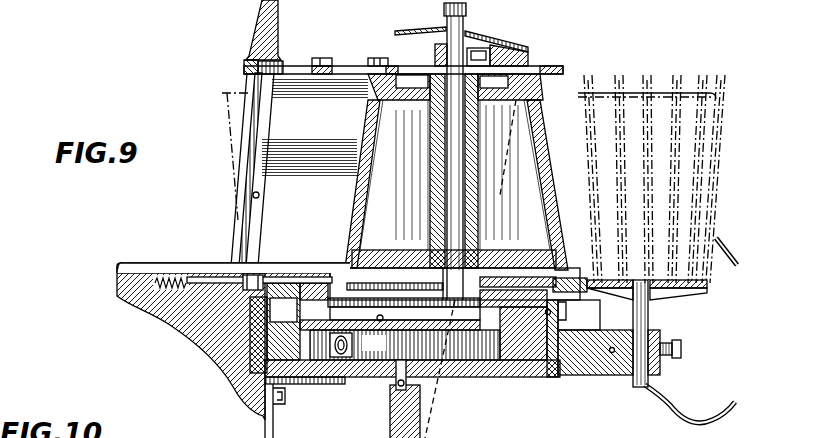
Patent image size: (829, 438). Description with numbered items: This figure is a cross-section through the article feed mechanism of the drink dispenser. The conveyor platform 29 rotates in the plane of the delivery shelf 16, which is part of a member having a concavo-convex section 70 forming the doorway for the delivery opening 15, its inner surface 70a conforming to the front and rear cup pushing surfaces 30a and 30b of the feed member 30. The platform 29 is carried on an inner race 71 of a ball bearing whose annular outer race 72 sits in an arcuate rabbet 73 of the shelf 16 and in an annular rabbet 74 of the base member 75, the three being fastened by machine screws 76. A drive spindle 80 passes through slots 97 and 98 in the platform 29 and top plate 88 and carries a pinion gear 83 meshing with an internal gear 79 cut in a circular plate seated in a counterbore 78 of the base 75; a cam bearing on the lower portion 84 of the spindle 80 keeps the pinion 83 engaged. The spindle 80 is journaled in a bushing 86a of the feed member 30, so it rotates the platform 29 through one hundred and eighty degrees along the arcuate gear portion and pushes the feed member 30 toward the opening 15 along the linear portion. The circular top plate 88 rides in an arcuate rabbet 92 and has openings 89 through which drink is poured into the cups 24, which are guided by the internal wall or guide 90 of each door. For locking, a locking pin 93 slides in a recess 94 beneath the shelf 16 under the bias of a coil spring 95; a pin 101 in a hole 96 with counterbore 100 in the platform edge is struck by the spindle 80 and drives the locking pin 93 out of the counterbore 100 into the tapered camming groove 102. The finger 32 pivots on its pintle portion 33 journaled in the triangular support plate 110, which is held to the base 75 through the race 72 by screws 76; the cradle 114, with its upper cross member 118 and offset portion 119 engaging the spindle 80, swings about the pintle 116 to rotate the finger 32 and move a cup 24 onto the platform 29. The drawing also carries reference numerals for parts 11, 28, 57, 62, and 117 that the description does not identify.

The hopper axis 11 is at (418, 2).
The delivery opening 15 is at (233, 169).
The delivery shelf 16 is at (127, 266).
The cup 24 is at (225, 106).
The tine mounting plate 28 is at (675, 290).
The conveyor platform 29 is at (316, 275).
The feed member 30 is at (452, 155).
The front cup pushing surface 30a is at (362, 124).
The rear cup pushing surface 30b is at (549, 144).
The finger 32 is at (734, 246).
The pintle portion 33 is at (612, 353).
The bearing block 57 is at (405, 345).
The tines 62 is at (615, 135).
The concavo-convex section 70 is at (173, 322).
The inner surface 70a is at (252, 191).
The inner race 71 is at (559, 315).
The annular outer race 72 is at (553, 375).
The arcuate rabbet 73 is at (248, 347).
The annular rabbet 74 is at (251, 368).
The base member 75 is at (506, 366).
The machine screws 76 is at (348, 376).
The counterbore 78 is at (472, 358).
The internal gear 79 is at (345, 305).
The drive spindle 80 is at (470, 24).
The pinion gear 83 is at (445, 307).
The lower portion of spindle 84 is at (458, 330).
The bushing 86a is at (441, 152).
The top plate 88 is at (246, 64).
The openings 89 is at (298, 66).
The internal wall or guide 90 is at (272, 131).
The arcuate rabbet 92 is at (278, 62).
The locking pin 93 is at (239, 275).
The recess 94 is at (195, 279).
The coil spring 95 is at (162, 278).
The hole 96 is at (276, 280).
The slot 97 is at (398, 284).
The slot 98 is at (350, 66).
The counterbore 100 is at (251, 276).
The pin 101 is at (291, 282).
The tapered camming groove 102 is at (244, 252).
The triangular support plate 110 is at (585, 378).
The cradle 114 is at (491, 35).
The pintle 116 is at (406, 390).
The pin 117 is at (396, 387).
The upper cross member 118 is at (506, 50).
The offset portion 119 is at (407, 26).